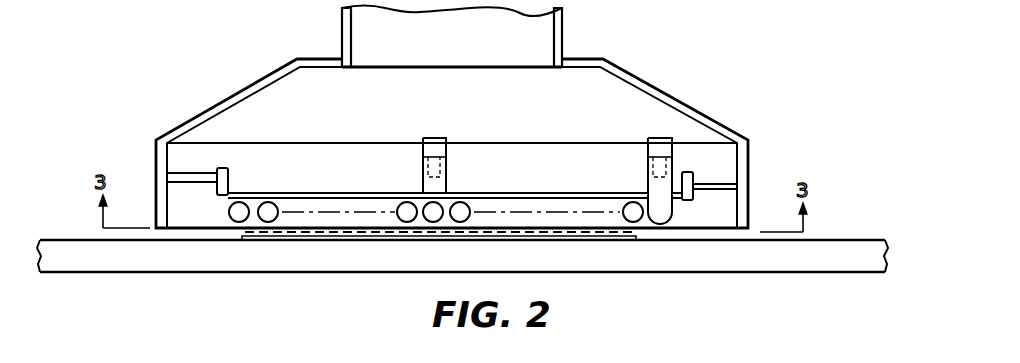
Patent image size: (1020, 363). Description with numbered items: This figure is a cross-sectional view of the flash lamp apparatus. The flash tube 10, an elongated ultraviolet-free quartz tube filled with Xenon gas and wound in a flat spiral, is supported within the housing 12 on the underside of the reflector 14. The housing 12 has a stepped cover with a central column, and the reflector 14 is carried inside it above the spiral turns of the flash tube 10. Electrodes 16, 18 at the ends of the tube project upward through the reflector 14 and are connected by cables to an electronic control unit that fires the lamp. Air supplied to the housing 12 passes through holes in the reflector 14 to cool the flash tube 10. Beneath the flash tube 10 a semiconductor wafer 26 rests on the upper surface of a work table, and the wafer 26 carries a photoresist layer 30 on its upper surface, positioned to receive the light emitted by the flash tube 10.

The flash tube 10 is at (638, 217).
The housing 12 is at (661, 93).
The reflector 14 is at (611, 195).
The electrode 16 is at (430, 137).
The electrode 18 is at (659, 137).
The semiconductor wafer 26 is at (377, 241).
The photoresist layer 30 is at (309, 240).